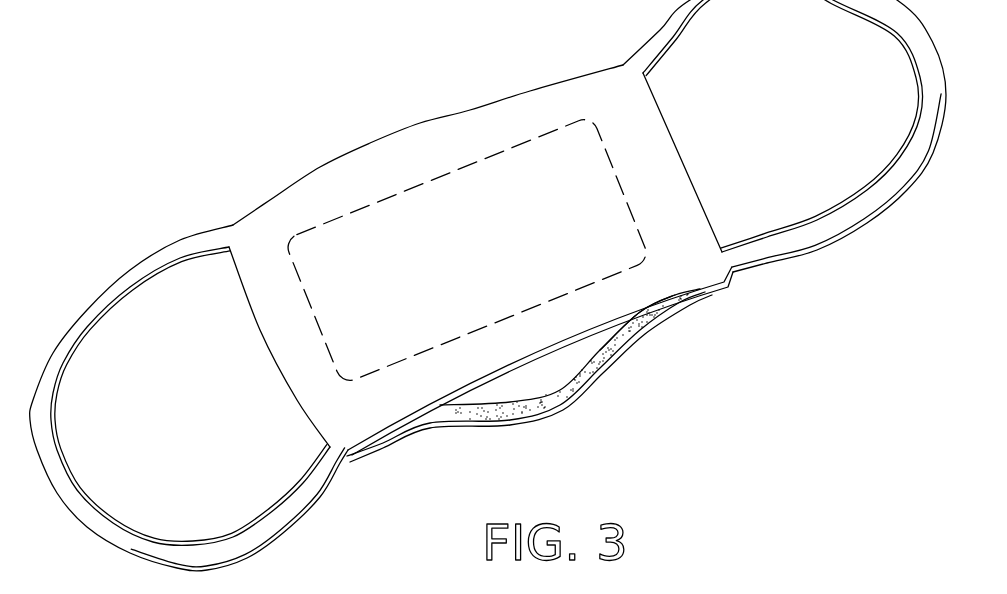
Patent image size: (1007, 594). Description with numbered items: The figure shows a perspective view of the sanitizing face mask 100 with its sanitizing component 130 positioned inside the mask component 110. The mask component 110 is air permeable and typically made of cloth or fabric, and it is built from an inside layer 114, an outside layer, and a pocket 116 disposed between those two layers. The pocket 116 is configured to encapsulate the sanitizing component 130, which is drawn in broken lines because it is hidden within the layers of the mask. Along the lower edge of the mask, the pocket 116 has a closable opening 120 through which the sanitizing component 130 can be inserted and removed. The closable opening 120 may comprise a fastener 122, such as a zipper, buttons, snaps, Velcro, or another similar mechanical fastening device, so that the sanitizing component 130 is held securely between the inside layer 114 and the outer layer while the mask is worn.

The sanitizing face mask 100 is at (488, 285).
The mask component 110 is at (481, 234).
The inside layer 114 is at (684, 197).
The pocket 116 is at (490, 390).
The closable opening 120 is at (660, 328).
The fastener 122 is at (602, 368).
The sanitizing component 130 is at (443, 173).